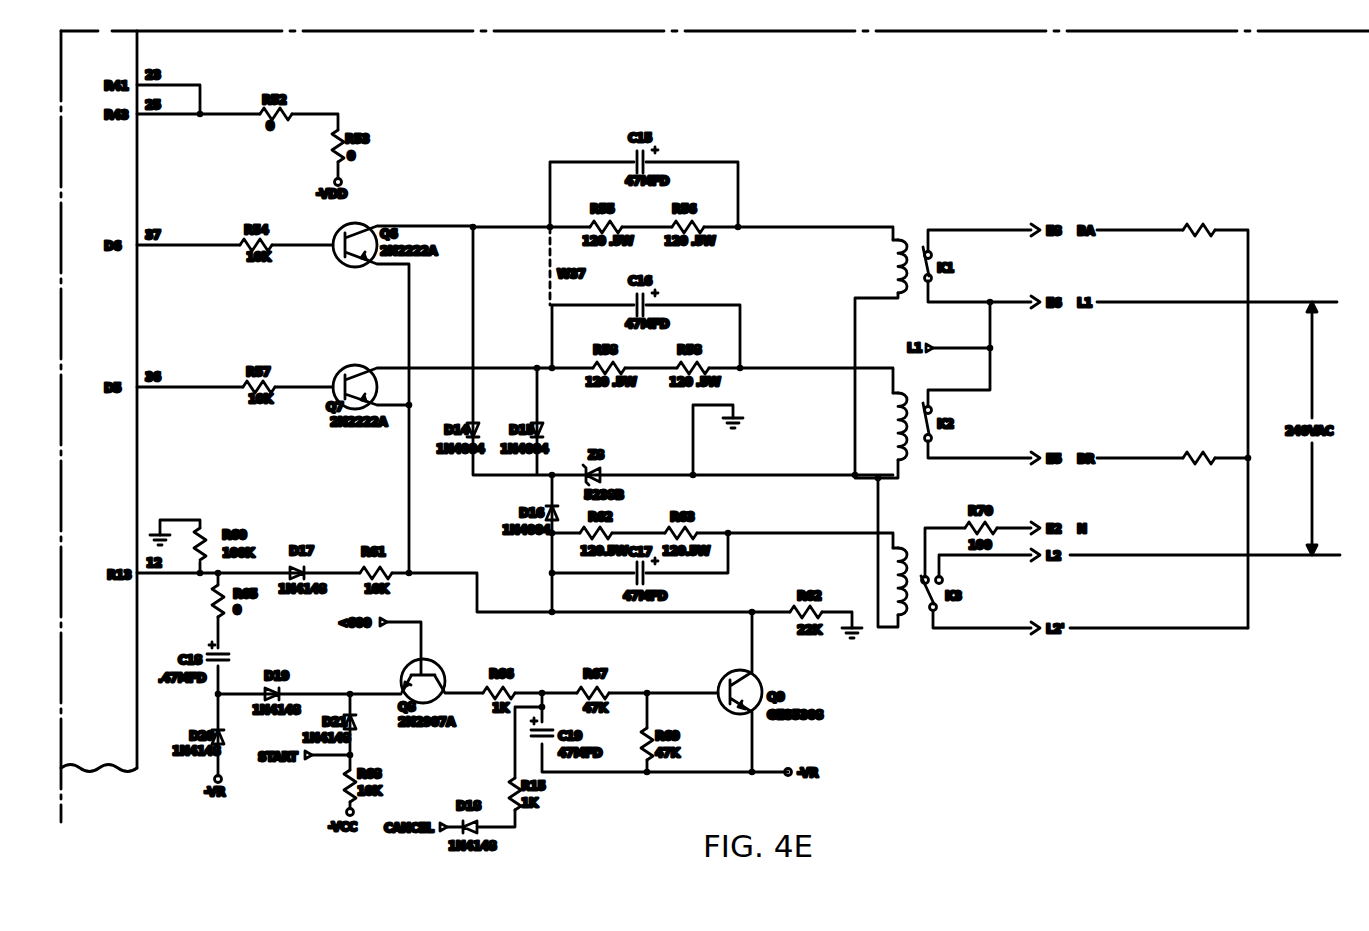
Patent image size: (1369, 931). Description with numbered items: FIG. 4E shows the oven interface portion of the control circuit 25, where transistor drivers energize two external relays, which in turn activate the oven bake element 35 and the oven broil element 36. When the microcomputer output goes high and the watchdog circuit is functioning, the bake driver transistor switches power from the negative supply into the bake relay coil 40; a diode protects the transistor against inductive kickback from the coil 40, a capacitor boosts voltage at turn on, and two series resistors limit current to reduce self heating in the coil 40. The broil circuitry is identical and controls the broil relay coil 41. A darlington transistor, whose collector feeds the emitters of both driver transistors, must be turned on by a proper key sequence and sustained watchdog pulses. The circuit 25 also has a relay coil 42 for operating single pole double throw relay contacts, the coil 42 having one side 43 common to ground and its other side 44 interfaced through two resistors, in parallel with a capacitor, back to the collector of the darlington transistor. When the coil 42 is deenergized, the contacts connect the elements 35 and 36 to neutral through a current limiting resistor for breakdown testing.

The system 25 is at (1236, 131).
The oven bake element 35 is at (1216, 231).
The oven broil element 36 is at (1198, 466).
The K1 relay coil 40 is at (908, 240).
The relay coil 41 is at (906, 400).
The relay coil 42 is at (923, 603).
The one side 43 is at (902, 627).
The other side 44 is at (901, 548).